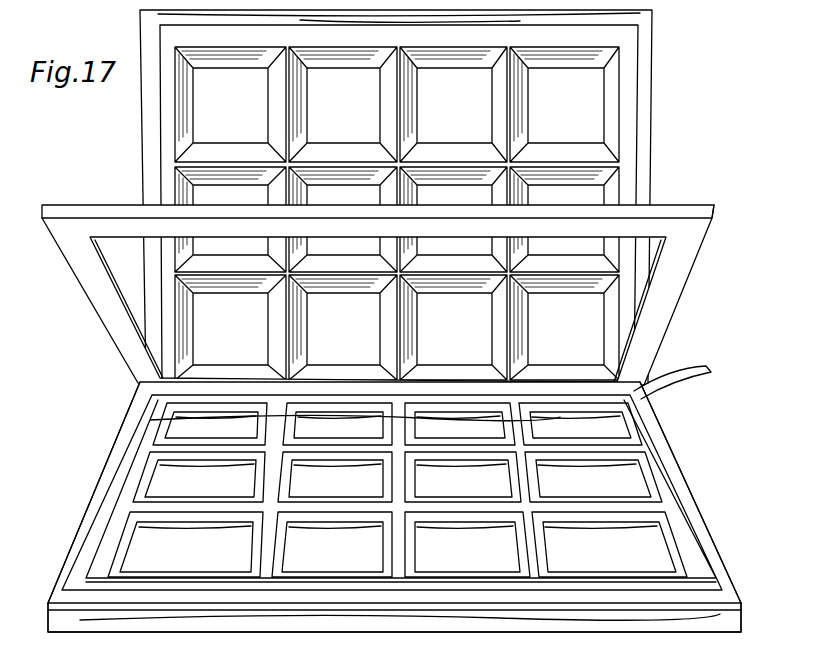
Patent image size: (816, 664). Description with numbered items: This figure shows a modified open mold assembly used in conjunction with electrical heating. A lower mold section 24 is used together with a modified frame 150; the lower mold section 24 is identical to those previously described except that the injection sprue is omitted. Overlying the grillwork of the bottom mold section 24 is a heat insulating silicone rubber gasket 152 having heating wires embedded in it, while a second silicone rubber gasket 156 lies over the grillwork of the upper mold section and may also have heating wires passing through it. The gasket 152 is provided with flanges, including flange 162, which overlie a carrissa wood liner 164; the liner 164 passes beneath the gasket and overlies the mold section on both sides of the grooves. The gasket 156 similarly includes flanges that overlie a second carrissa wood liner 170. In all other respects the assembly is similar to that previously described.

The lower mold section 24 is at (147, 625).
The modified frame 150 is at (681, 275).
The heat insulating silicone rubber gasket 152 is at (667, 493).
The second silicone rubber gasket 156 is at (632, 137).
The flange 162 is at (143, 480).
The carrissa wood liner 164 is at (736, 538).
The second carrissa wood liner 170 is at (681, 77).